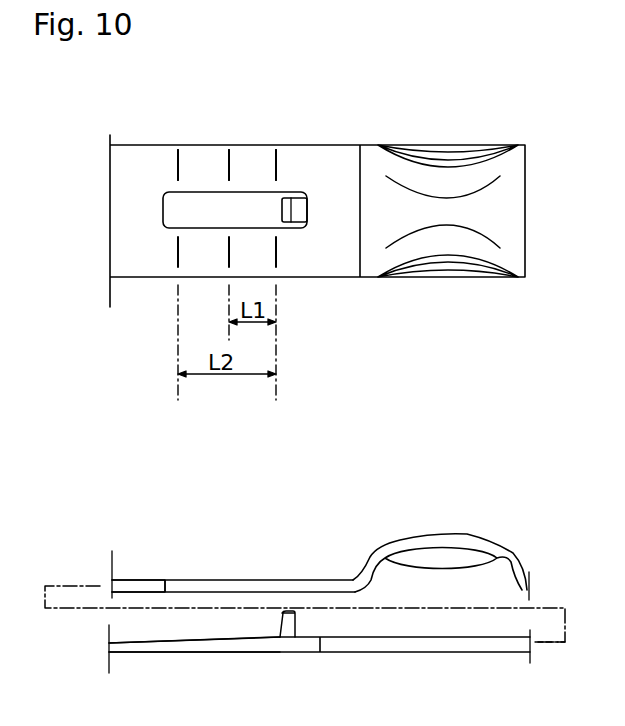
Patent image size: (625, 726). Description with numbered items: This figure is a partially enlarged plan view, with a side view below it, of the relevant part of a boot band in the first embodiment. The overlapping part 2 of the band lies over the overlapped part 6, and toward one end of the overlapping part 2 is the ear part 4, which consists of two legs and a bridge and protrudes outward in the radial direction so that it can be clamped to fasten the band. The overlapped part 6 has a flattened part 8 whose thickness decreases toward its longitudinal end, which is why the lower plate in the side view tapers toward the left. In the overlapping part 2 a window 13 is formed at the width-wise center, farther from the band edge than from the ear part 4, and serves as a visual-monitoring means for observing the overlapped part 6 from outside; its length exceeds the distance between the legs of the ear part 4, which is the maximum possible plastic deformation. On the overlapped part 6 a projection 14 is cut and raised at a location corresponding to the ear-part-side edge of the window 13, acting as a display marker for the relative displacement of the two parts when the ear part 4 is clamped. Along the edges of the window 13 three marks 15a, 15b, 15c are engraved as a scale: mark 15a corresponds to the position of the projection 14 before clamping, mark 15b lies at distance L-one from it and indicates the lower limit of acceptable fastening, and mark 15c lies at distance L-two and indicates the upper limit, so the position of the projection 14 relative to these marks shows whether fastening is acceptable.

The overlapping part 2 is at (143, 578).
The ear part 4 is at (467, 143).
The overlapped part 6 is at (375, 647).
The flattened part 8 is at (200, 650).
The window 13 is at (177, 208).
The projection 14 is at (300, 212).
The mark 15a is at (283, 165).
The mark 15b is at (232, 160).
The mark 15c is at (185, 165).